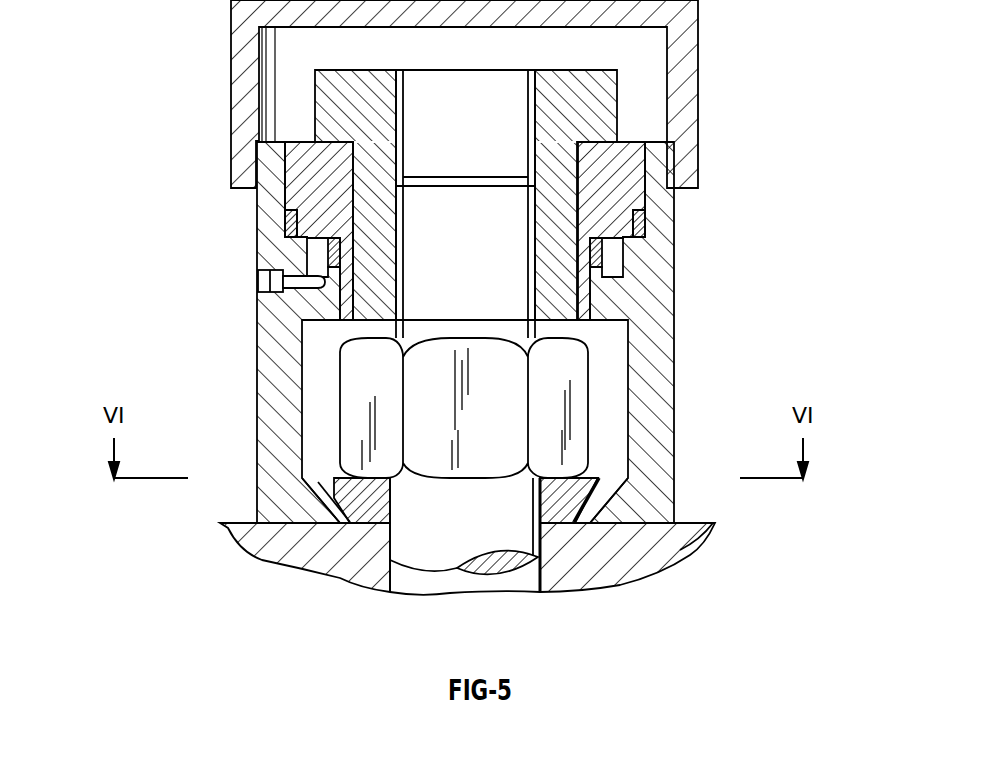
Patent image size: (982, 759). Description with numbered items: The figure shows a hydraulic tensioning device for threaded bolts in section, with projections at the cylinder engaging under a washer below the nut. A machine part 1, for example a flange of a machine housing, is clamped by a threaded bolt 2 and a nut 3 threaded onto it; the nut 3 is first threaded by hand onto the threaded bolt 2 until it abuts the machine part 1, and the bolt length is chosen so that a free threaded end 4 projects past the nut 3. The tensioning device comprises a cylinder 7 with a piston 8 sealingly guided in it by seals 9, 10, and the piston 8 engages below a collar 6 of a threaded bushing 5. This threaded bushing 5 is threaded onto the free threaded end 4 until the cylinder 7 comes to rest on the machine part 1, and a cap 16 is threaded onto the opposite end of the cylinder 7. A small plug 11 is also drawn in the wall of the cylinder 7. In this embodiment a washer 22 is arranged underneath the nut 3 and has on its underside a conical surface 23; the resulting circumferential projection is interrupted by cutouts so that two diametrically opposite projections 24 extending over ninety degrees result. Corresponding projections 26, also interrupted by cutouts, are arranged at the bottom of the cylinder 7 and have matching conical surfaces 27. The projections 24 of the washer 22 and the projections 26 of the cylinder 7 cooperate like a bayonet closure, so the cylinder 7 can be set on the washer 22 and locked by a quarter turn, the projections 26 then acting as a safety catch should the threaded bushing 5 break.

The machine part 1 is at (627, 557).
The threaded bolt 2 is at (510, 525).
The nut 3 is at (372, 387).
The free threaded end 4 is at (510, 273).
The threaded bushing 5 is at (565, 188).
The collar 6 is at (605, 99).
The cylinder 7 is at (660, 353).
The piston 8 is at (313, 185).
The seal 9 is at (287, 222).
The seal 10 is at (330, 257).
The vent plug 11 is at (267, 284).
The cap 16 is at (680, 29).
The washer 22 is at (600, 477).
The conical surface 23 is at (347, 522).
The projections 24 is at (560, 498).
The projections 26 is at (680, 550).
The conical surfaces 27 is at (317, 487).